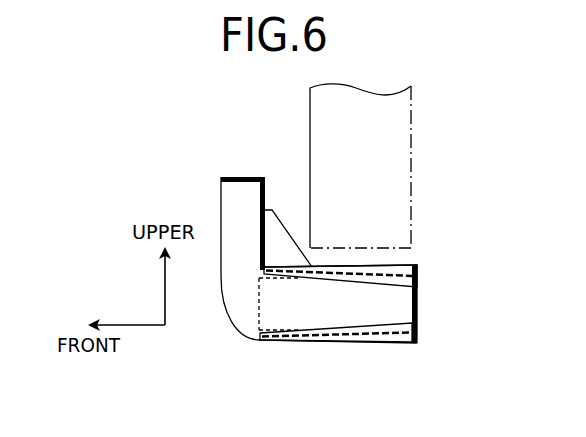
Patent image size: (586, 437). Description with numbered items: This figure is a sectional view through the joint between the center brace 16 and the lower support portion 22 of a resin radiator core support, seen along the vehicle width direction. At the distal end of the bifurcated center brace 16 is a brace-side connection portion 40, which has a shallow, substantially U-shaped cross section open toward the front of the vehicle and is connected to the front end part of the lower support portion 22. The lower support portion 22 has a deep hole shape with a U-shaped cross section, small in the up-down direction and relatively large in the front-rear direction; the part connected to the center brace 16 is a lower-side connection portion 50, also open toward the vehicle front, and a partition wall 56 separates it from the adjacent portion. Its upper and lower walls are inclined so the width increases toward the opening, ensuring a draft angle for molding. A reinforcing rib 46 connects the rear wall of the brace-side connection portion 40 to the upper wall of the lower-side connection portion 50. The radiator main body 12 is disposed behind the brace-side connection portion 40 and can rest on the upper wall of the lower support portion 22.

The radiator main body 12 is at (411, 141).
The center brace 16 is at (195, 179).
The lower support portion 22 is at (266, 368).
The brace-side connection portion 40 is at (237, 177).
The reinforcing rib 46 is at (280, 241).
The lower-side connection portion 50 is at (302, 341).
The partition wall 56 is at (360, 308).